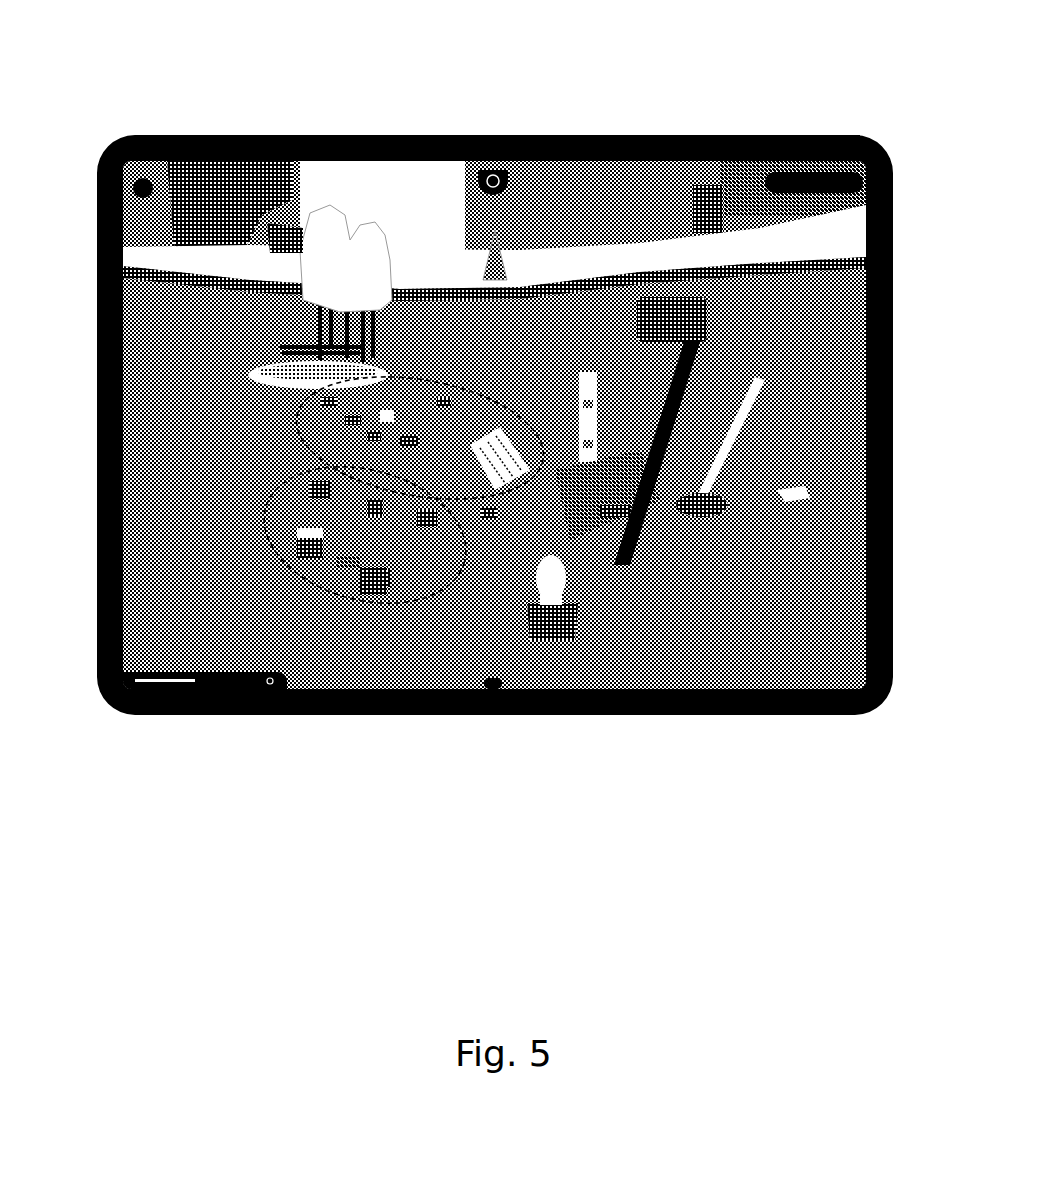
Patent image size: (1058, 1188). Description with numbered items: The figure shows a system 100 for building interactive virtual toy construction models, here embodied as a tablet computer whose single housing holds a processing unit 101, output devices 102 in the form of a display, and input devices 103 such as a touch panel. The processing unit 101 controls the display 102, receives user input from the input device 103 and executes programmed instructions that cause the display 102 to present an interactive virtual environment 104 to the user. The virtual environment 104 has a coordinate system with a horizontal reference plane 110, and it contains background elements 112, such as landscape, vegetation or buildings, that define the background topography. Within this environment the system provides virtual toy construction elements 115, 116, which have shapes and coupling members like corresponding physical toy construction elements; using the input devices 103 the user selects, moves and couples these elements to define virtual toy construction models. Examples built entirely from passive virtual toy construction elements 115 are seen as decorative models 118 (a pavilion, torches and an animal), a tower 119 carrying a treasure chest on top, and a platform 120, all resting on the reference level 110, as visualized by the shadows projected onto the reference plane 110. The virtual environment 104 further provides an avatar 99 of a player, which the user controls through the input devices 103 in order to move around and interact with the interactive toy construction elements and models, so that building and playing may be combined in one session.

The system 100 is at (118, 68).
The processing unit 101 is at (240, 152).
The output devices 102 is at (320, 188).
The horizontal reference plane 110 is at (508, 320).
The background elements 112 is at (337, 220).
The passive virtual toy construction elements 115 is at (295, 393).
The virtual toy construction elements 116 is at (290, 494).
The decorative models 118 is at (305, 290).
The tower 119 is at (692, 380).
The platform 120 is at (643, 603).
The avatar 99 is at (562, 655).
The input devices 103 is at (320, 653).
The interactive virtual environment 104 is at (495, 565).